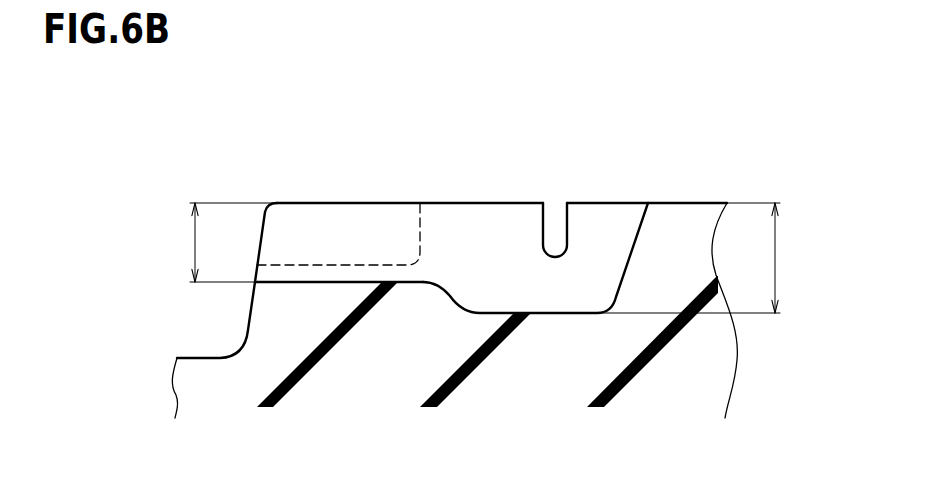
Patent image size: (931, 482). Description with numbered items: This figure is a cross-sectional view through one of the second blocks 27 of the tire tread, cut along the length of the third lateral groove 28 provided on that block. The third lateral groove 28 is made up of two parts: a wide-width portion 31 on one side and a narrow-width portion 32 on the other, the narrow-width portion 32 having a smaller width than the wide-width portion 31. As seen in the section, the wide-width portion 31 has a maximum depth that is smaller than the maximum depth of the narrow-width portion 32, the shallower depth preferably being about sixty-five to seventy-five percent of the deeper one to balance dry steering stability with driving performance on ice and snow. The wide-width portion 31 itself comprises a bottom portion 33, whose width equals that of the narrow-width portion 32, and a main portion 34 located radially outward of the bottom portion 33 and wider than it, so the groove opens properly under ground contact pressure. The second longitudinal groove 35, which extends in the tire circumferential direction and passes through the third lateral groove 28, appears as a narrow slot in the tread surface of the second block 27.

The second block 27 is at (621, 150).
The third lateral groove 28 is at (477, 87).
The wide-width portion 31 is at (413, 135).
The narrow-width portion 32 is at (497, 276).
The bottom portion 33 is at (370, 268).
The main portion 34 is at (316, 231).
The second longitudinal groove 35 is at (551, 220).